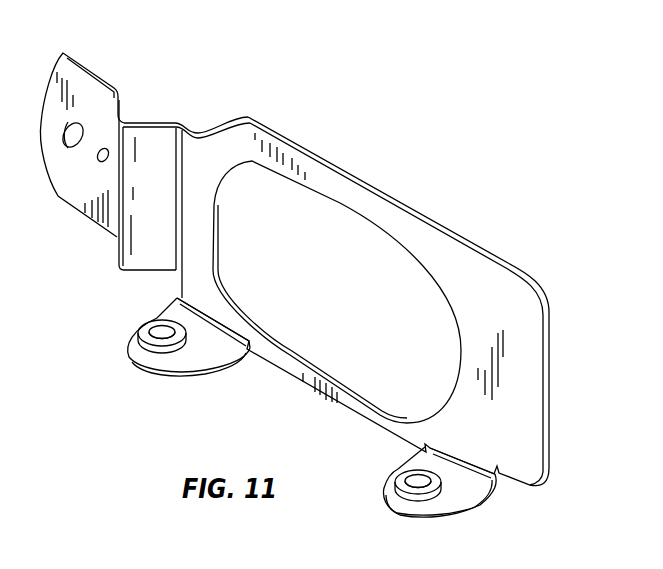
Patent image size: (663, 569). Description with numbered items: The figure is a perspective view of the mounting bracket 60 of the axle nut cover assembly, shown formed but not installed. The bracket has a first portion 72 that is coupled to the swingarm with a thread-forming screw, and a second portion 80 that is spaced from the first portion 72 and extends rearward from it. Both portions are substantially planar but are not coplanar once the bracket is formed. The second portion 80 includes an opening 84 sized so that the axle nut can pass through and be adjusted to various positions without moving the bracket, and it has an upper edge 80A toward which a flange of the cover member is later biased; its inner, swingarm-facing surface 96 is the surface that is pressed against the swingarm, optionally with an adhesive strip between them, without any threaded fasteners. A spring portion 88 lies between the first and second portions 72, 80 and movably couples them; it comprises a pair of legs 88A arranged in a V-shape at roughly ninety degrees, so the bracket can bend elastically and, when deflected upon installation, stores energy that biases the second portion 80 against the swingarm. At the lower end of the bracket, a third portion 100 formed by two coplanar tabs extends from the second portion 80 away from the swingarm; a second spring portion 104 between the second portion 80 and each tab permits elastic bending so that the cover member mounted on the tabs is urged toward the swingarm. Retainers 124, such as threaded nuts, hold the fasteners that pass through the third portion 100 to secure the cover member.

The mounting bracket 60 is at (324, 290).
The first portion 72 is at (86, 90).
The second portion 80 is at (393, 290).
The upper edge of the second portion 80A is at (325, 160).
The opening 84 is at (343, 207).
The spring portion 88 is at (151, 177).
The legs 88A is at (155, 124).
The inner, swingarm-facing surface 96 is at (549, 378).
The third portion 100 is at (317, 415).
The second spring portion 104 is at (202, 325).
The retainers 124 is at (151, 352).